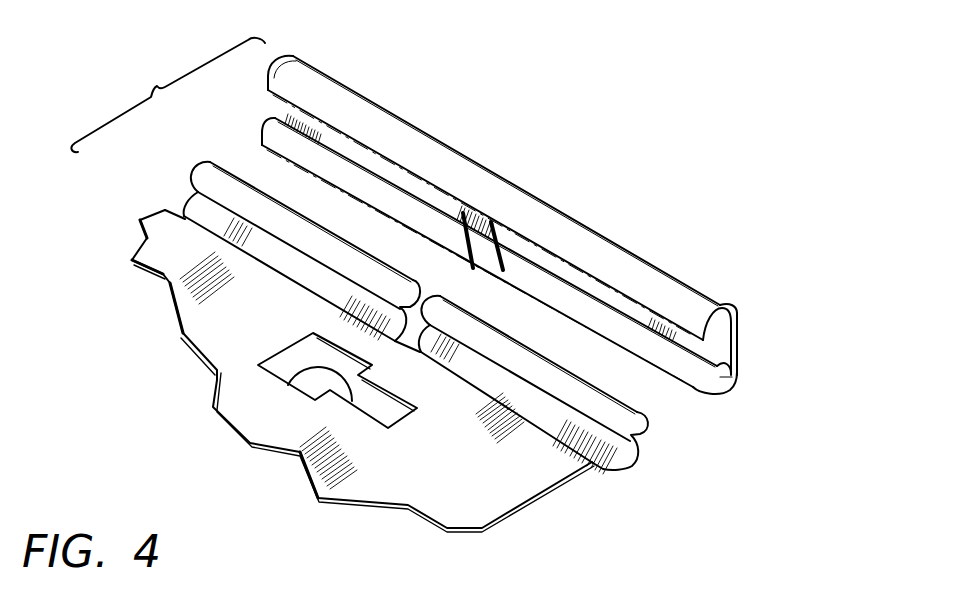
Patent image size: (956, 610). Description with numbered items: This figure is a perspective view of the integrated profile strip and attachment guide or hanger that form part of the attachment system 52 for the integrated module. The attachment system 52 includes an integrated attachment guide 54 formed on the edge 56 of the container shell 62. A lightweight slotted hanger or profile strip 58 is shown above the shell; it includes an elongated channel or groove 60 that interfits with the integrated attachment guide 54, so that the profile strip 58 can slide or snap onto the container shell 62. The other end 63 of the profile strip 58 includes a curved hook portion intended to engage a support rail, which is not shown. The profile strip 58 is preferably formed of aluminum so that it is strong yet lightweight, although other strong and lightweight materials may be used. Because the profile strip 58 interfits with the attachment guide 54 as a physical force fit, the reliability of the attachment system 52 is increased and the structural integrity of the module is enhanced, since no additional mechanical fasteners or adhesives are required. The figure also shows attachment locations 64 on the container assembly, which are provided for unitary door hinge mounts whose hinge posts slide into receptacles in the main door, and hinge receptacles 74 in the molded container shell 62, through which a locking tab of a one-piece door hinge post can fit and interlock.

The attachment system 52 is at (481, 379).
The integrated attachment guide 54 is at (641, 424).
The edge 56 is at (565, 446).
The profile strip 58 is at (760, 338).
The channel 60 is at (740, 393).
The container shell 62 is at (502, 527).
The other end 63 is at (598, 258).
The attachment locations 64 is at (263, 343).
The hinge receptacles 74 is at (289, 385).